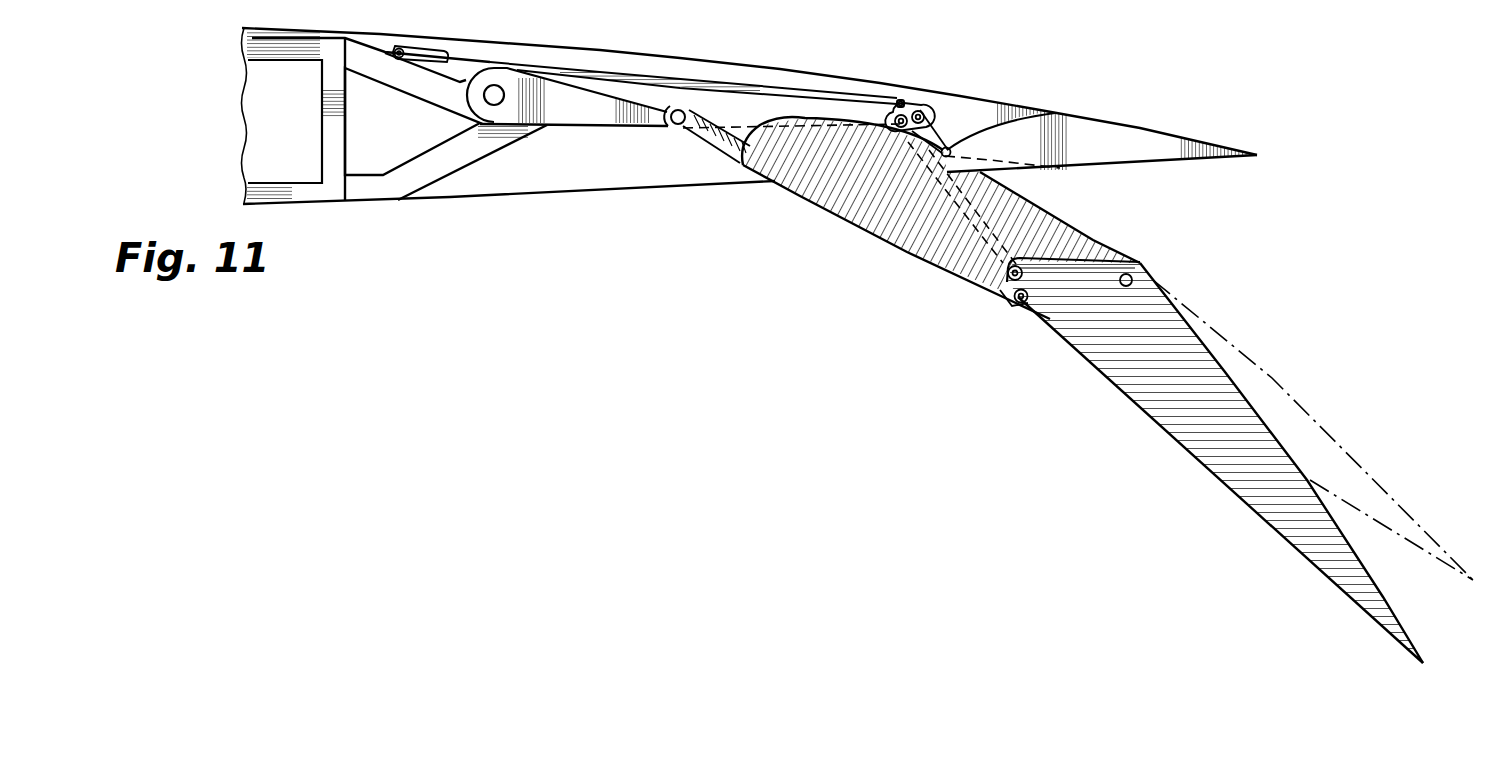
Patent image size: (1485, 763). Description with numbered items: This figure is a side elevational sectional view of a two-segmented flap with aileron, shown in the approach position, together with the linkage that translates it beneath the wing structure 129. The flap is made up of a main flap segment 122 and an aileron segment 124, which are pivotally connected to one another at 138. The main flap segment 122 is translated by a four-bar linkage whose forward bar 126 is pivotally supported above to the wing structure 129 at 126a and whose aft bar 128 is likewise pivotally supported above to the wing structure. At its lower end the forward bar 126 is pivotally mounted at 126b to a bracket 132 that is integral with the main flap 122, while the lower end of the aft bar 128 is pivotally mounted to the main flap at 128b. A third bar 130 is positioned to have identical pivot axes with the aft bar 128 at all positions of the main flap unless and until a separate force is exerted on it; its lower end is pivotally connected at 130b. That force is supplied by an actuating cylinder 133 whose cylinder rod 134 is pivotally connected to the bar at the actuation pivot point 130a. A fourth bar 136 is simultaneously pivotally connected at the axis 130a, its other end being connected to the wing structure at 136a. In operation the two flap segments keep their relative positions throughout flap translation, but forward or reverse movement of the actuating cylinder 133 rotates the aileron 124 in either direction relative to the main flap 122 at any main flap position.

The main flap segment 122 is at (1094, 236).
The aileron segment 124 is at (1220, 475).
The forward bar 126 is at (597, 93).
The pivot of forward bar on wing structure 126a is at (497, 86).
The lower pivot of forward bar 126b is at (678, 126).
The aft bar 128 is at (948, 148).
The lower pivot of aft bar 128b is at (1010, 300).
The wing structure 129 is at (302, 57).
The third bar 130 is at (913, 131).
The actuation pivot point 130a is at (910, 107).
The lower pivot of third bar 130b is at (1000, 284).
The bracket 132 is at (728, 157).
The actuating cylinder 133 is at (430, 44).
The cylinder rod 134 is at (833, 94).
The fourth bar 136 is at (1037, 113).
The connection of fourth bar to wing structure 136a is at (1048, 172).
The flap-aileron pivot 138 is at (1137, 277).